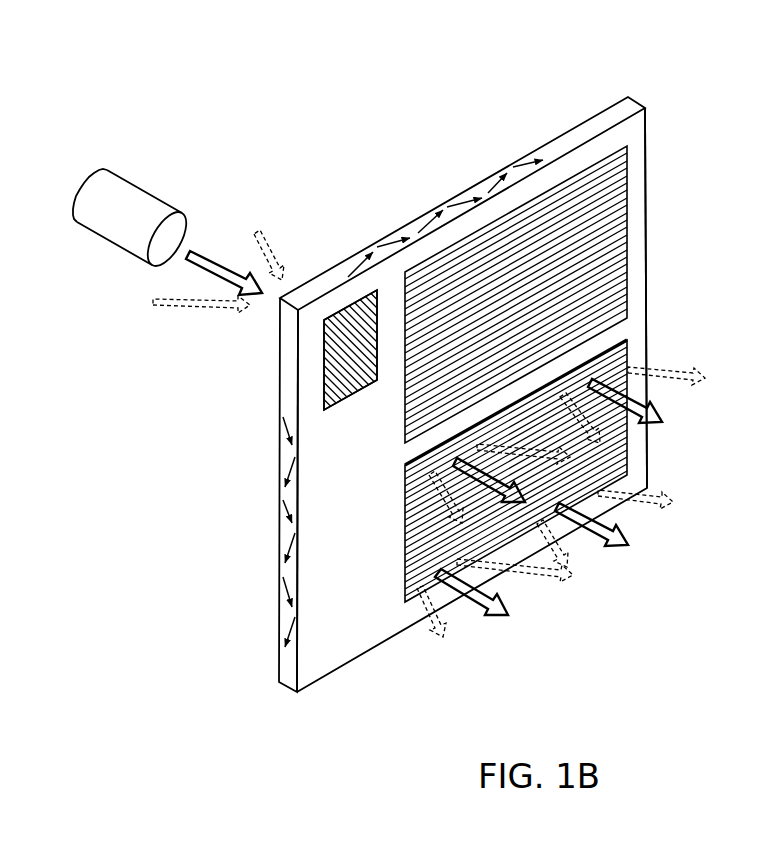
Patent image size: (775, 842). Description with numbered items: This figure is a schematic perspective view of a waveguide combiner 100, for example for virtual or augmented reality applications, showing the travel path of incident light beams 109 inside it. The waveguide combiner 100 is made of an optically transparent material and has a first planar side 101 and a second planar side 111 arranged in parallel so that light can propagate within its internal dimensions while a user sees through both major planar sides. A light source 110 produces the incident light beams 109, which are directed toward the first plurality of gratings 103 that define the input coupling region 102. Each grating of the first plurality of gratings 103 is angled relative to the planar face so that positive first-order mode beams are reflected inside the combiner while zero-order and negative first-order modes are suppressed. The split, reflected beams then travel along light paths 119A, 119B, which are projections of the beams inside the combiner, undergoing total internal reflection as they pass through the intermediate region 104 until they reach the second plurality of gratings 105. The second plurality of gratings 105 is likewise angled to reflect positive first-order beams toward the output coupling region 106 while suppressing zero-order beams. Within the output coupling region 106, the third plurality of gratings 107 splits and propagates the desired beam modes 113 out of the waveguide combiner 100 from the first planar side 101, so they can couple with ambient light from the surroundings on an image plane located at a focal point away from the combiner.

The waveguide combiner 100 is at (672, 72).
The first planar side 101 is at (362, 627).
The input coupling region 102 is at (324, 377).
The first plurality of gratings 103 is at (338, 327).
The intermediate region 104 is at (628, 202).
The second plurality of gratings 105 is at (594, 260).
The output coupling region 106 is at (630, 343).
The third plurality of gratings 107 is at (618, 358).
The incident light beams 109 is at (212, 233).
The light source 110 is at (122, 190).
The second planar side 111 is at (278, 450).
The desired beam modes 113 is at (617, 547).
The light path 119A is at (488, 190).
The light path 119B is at (287, 547).